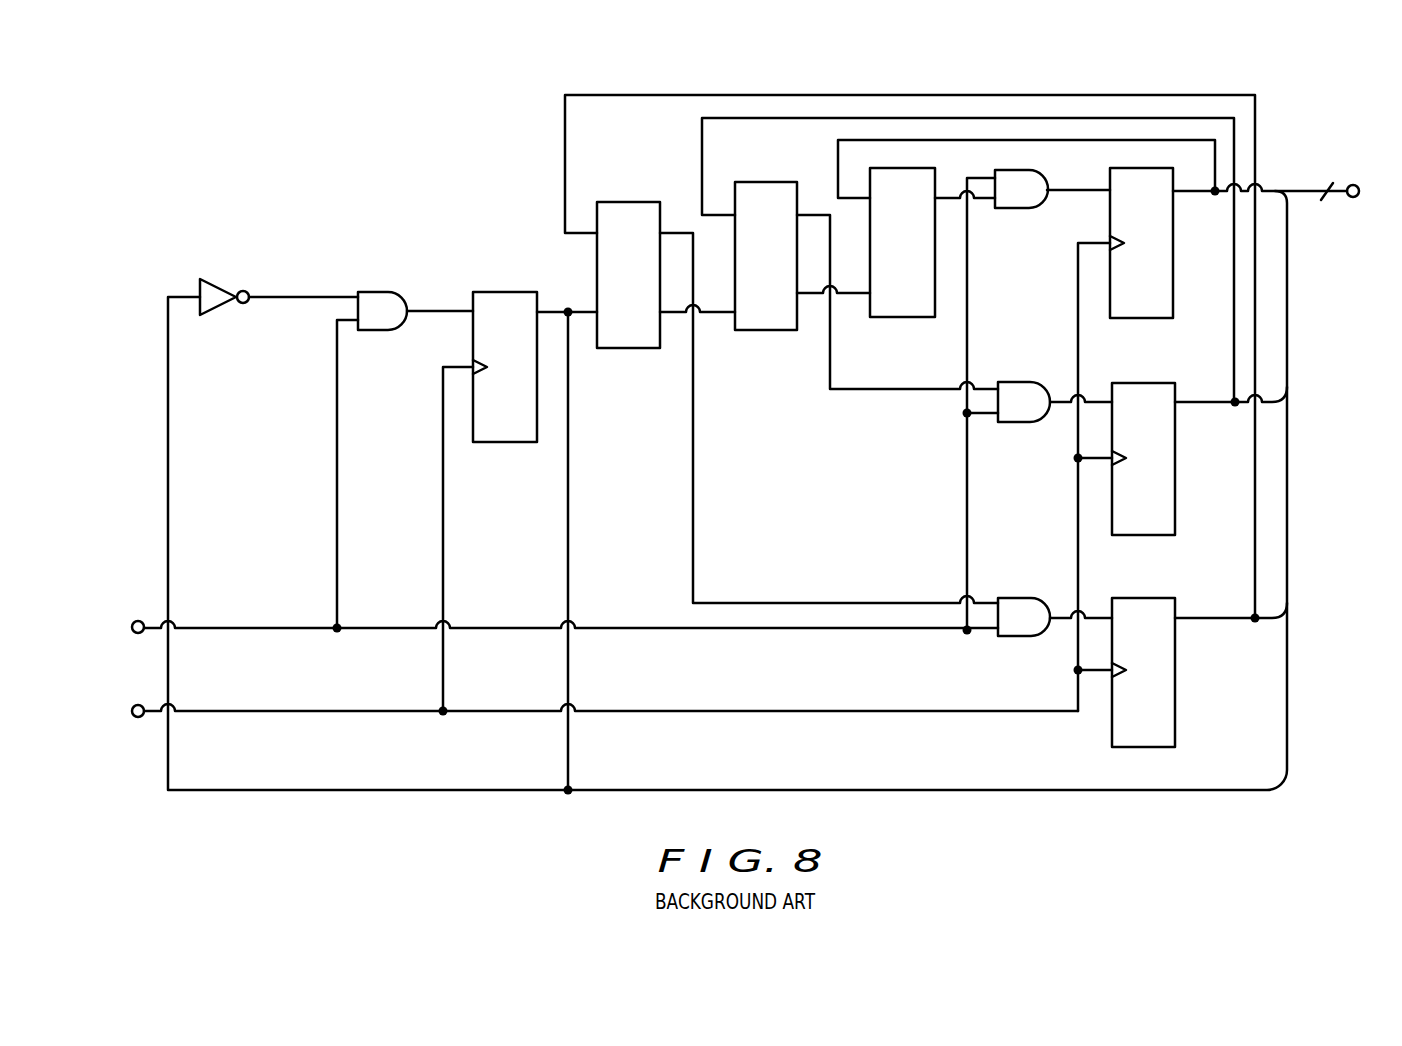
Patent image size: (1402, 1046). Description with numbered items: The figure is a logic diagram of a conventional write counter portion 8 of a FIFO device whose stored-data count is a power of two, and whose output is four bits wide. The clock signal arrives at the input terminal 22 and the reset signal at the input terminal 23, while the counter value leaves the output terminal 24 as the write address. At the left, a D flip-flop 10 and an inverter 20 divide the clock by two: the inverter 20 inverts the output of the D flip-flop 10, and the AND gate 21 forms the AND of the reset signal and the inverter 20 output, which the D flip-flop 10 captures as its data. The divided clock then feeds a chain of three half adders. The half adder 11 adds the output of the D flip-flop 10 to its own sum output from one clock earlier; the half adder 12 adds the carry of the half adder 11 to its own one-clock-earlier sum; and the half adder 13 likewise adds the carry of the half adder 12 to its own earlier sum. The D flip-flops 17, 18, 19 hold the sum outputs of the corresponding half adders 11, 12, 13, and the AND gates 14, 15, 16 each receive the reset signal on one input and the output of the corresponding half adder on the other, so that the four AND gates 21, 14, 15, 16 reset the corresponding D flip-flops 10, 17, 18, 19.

The write counter portion 8 is at (308, 93).
The D flip-flop 10 is at (513, 443).
The half adder 11 is at (634, 349).
The half adder 12 is at (772, 331).
The half adder 13 is at (925, 250).
The AND gate 14 is at (1027, 637).
The AND gate 15 is at (1027, 423).
The AND gate 16 is at (1025, 207).
The D flip-flop 17 is at (1120, 725).
The D flip-flop 18 is at (1120, 512).
The D flip-flop 19 is at (1120, 295).
The inverter 20 is at (217, 293).
The AND gate 21 is at (381, 296).
The input terminal 22 is at (140, 718).
The input terminal 23 is at (137, 619).
The output terminal 24 is at (1350, 200).